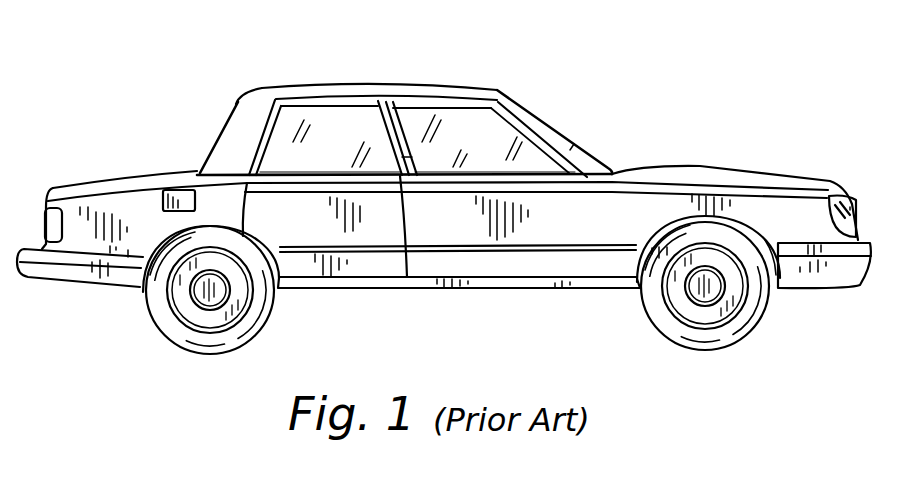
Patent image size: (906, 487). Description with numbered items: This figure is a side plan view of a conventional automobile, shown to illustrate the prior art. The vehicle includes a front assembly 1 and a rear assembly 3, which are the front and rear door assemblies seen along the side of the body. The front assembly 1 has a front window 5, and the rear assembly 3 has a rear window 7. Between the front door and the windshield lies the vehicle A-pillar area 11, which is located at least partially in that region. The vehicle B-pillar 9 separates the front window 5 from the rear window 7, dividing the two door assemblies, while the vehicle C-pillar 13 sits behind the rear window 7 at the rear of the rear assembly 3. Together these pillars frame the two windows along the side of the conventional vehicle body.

The front assembly 1 is at (530, 147).
The rear assembly 3 is at (297, 115).
The front window 5 is at (450, 120).
The rear window 7 is at (338, 120).
The B-pillar 9 is at (392, 95).
The A-pillar area 11 is at (520, 120).
The C-pillar 13 is at (257, 127).